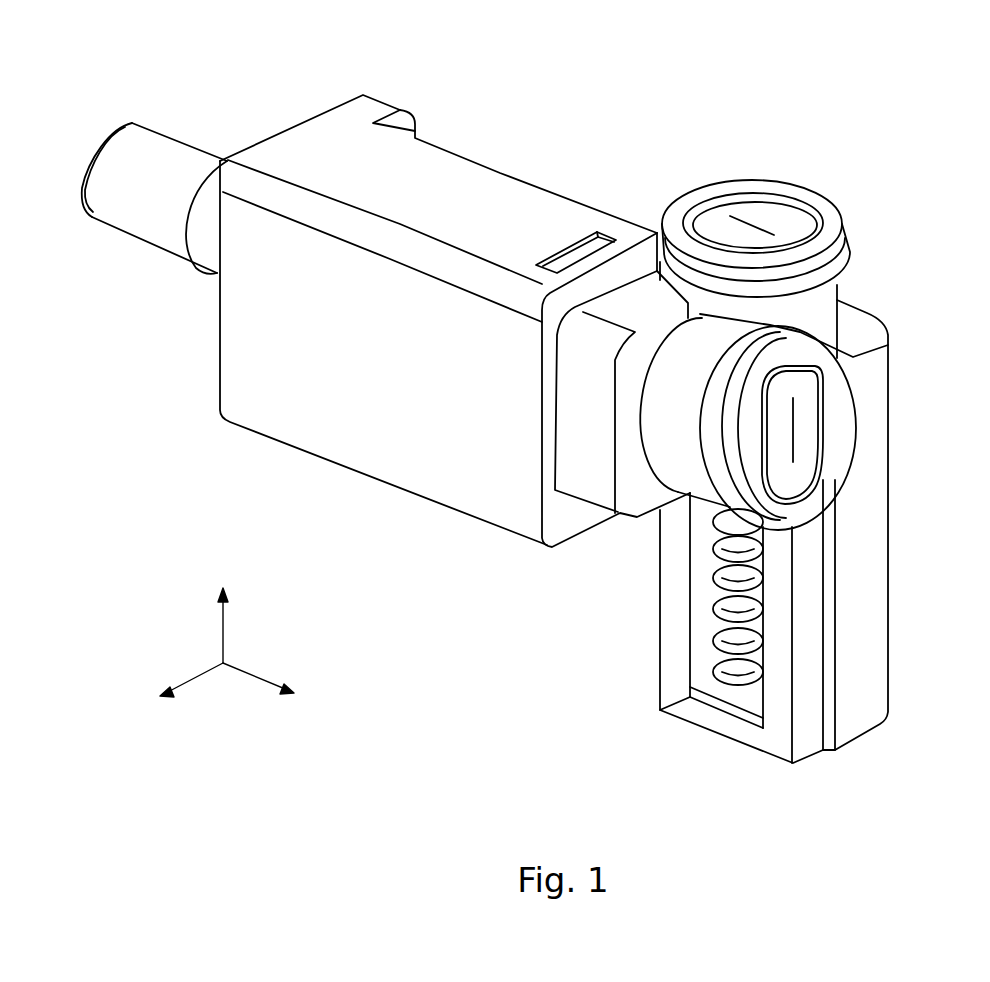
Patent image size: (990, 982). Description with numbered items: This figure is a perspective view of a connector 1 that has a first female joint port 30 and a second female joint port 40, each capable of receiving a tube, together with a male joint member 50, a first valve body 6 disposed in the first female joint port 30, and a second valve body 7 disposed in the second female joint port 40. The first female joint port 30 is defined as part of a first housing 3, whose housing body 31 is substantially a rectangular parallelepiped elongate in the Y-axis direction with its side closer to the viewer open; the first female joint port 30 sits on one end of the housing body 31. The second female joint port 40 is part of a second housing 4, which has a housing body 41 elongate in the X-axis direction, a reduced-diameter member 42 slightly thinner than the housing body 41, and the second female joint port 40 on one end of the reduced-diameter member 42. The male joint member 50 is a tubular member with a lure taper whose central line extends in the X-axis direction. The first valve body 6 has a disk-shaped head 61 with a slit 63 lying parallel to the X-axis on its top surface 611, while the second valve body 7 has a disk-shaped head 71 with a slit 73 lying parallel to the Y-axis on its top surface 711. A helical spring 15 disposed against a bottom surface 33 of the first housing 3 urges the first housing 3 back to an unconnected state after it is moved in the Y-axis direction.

The connector 1 is at (594, 110).
The first housing 3 is at (889, 632).
The second housing 4 is at (327, 460).
The helical spring 15 is at (717, 642).
The first female joint port 30 is at (757, 187).
The housing body 31 is at (863, 686).
The bottom surface 33 is at (737, 698).
The second female joint port 40 is at (840, 387).
The housing body 41 is at (438, 460).
The reduced-diameter member 42 is at (590, 462).
The male joint member 50 is at (152, 158).
The first valve body 6 is at (768, 215).
The head 61 is at (784, 211).
The top surface 611 is at (712, 212).
The slit 63 is at (772, 230).
The second valve body 7 is at (807, 422).
The head 71 is at (862, 442).
The slit 73 is at (793, 445).
The top surface 711 is at (793, 475).